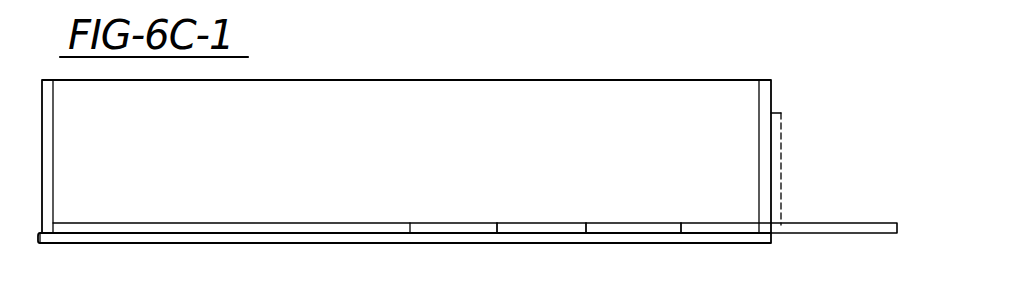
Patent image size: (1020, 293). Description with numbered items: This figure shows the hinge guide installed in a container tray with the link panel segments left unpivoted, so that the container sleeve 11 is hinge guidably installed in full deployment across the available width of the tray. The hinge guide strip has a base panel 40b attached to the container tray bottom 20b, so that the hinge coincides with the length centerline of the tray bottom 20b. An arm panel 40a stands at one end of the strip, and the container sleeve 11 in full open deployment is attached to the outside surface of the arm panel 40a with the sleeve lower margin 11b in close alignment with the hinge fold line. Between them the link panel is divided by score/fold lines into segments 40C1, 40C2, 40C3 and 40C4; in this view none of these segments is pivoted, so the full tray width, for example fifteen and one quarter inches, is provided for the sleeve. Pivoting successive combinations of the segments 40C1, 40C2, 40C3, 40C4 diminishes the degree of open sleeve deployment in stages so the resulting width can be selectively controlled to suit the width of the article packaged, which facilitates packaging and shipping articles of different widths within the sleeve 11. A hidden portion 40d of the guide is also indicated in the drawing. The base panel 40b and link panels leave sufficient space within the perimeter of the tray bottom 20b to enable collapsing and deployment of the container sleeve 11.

The container sleeve 11 is at (42, 148).
The sleeve lower margin 11b is at (40, 236).
The container tray bottom 20b is at (412, 236).
The base panel 40b is at (200, 229).
The link panel segment C1 40C1 is at (708, 228).
The link panel segment C2 40C2 is at (617, 228).
The link panel segment C3 40C3 is at (520, 228).
The link panel segment C4 40C4 is at (445, 228).
The strip hidden portion 40d is at (772, 175).
The arm panel 40a is at (828, 234).